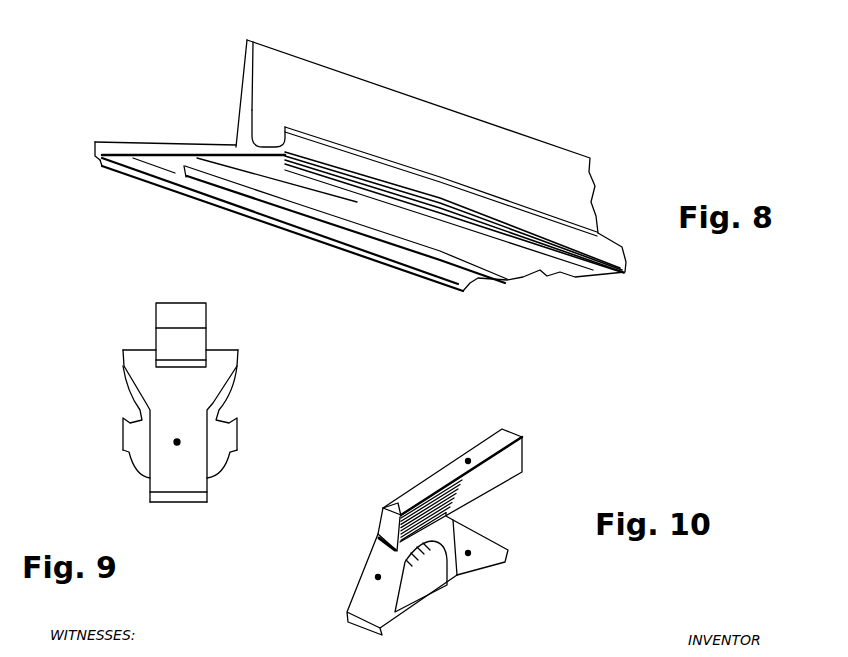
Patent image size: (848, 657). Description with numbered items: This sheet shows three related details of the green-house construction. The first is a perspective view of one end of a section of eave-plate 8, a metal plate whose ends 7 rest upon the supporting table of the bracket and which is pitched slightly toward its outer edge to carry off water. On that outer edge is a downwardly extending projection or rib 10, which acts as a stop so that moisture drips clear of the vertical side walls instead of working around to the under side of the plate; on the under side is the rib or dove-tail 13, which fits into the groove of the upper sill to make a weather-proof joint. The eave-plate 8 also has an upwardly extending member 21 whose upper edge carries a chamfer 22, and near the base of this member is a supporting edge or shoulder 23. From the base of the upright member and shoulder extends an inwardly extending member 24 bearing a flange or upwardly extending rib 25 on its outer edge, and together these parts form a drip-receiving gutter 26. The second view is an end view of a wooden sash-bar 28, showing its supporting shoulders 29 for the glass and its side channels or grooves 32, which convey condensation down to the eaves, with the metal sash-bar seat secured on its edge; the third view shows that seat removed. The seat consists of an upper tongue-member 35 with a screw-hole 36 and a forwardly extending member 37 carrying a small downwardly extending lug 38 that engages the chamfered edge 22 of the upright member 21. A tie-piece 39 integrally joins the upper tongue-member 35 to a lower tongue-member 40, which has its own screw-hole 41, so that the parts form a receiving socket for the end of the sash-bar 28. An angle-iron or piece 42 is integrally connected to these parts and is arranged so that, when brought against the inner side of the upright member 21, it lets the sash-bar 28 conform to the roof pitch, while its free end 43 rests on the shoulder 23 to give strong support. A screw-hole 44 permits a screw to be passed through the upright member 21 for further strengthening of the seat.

In FIG. 8, the ends of eave-plates 7 is at (138, 145).
In FIG. 8, the eave-plate 8 is at (187, 143).
In FIG. 8, the downwardly extending projection or rib 10 is at (95, 162).
In FIG. 8, the rib or dove-tail 13 is at (287, 203).
In FIG. 8, the upwardly extending member 21 is at (495, 137).
In FIG. 8, the chamfer 22 is at (247, 38).
In FIG. 8, the supporting edge or shoulder 23 is at (260, 117).
In FIG. 8, the inwardly extending member 24 is at (268, 150).
In FIG. 8, the flange or upwardly extending rib 25 is at (313, 147).
In FIG. 8, the drip-receiving gutter 26 is at (265, 130).
In FIG. 9, the sash-bar 28 is at (237, 425).
In FIG. 9, the supporting shoulders 29 is at (122, 350).
In FIG. 10, the supporting shoulders 29 is at (455, 520).
In FIG. 9, the side channels or grooves 32 is at (132, 413).
In FIG. 9, the upper tongue-member 35 is at (193, 313).
In FIG. 10, the upper tongue-member 35 is at (510, 430).
In FIG. 10, the screw-hole 36 is at (468, 458).
In FIG. 9, the forwardly extending member 37 is at (193, 342).
In FIG. 10, the forwardly extending member 37 is at (400, 515).
In FIG. 9, the downwardly extending lug 38 is at (180, 367).
In FIG. 10, the downwardly extending lug 38 is at (380, 540).
In FIG. 9, the tie-piece 39 is at (237, 377).
In FIG. 10, the tie-piece 39 is at (433, 582).
In FIG. 10, the lower tongue-member 40 is at (510, 548).
In FIG. 10, the screw-hole 41 is at (472, 552).
In FIG. 9, the angle-iron or piece 42 is at (162, 448).
In FIG. 10, the angle-iron or piece 42 is at (363, 593).
In FIG. 9, the free end 43 is at (188, 502).
In FIG. 10, the free end 43 is at (367, 623).
In FIG. 9, the screw-hole 44 is at (180, 442).
In FIG. 10, the screw-hole 44 is at (375, 577).